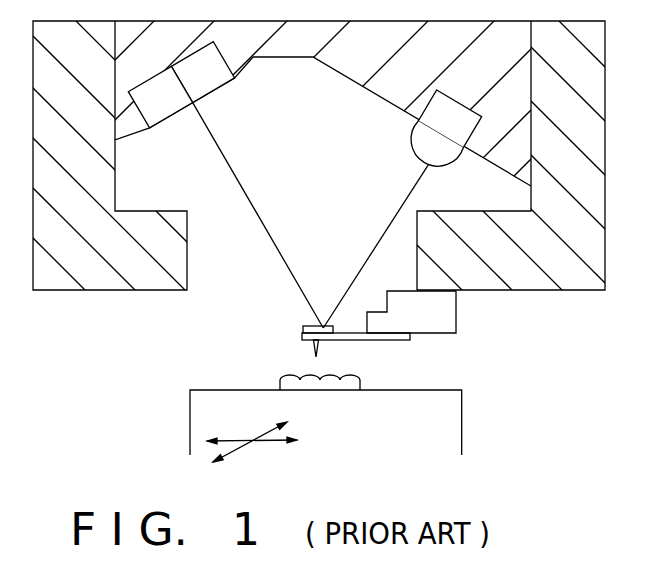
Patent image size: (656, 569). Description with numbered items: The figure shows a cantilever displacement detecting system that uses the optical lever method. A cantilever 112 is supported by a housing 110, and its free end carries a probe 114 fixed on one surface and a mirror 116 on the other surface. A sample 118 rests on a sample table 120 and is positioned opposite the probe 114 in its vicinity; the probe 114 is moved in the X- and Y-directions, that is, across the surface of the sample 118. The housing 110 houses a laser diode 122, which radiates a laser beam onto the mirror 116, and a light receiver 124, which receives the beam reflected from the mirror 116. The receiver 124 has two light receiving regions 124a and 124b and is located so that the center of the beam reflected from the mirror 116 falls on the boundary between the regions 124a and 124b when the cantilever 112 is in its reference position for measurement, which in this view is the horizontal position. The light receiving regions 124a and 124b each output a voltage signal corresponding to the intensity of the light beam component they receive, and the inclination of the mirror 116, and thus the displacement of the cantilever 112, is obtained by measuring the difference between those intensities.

The housing 110 is at (522, 304).
The cantilever 112 is at (372, 341).
The probe 114 is at (313, 349).
The mirror 116 is at (313, 325).
The sample 118 is at (278, 376).
The sample table 120 is at (462, 424).
The laser diode 122 is at (416, 128).
The light receiver 124 is at (226, 185).
The light receiving region 124a is at (218, 86).
The light receiving region 124b is at (167, 118).